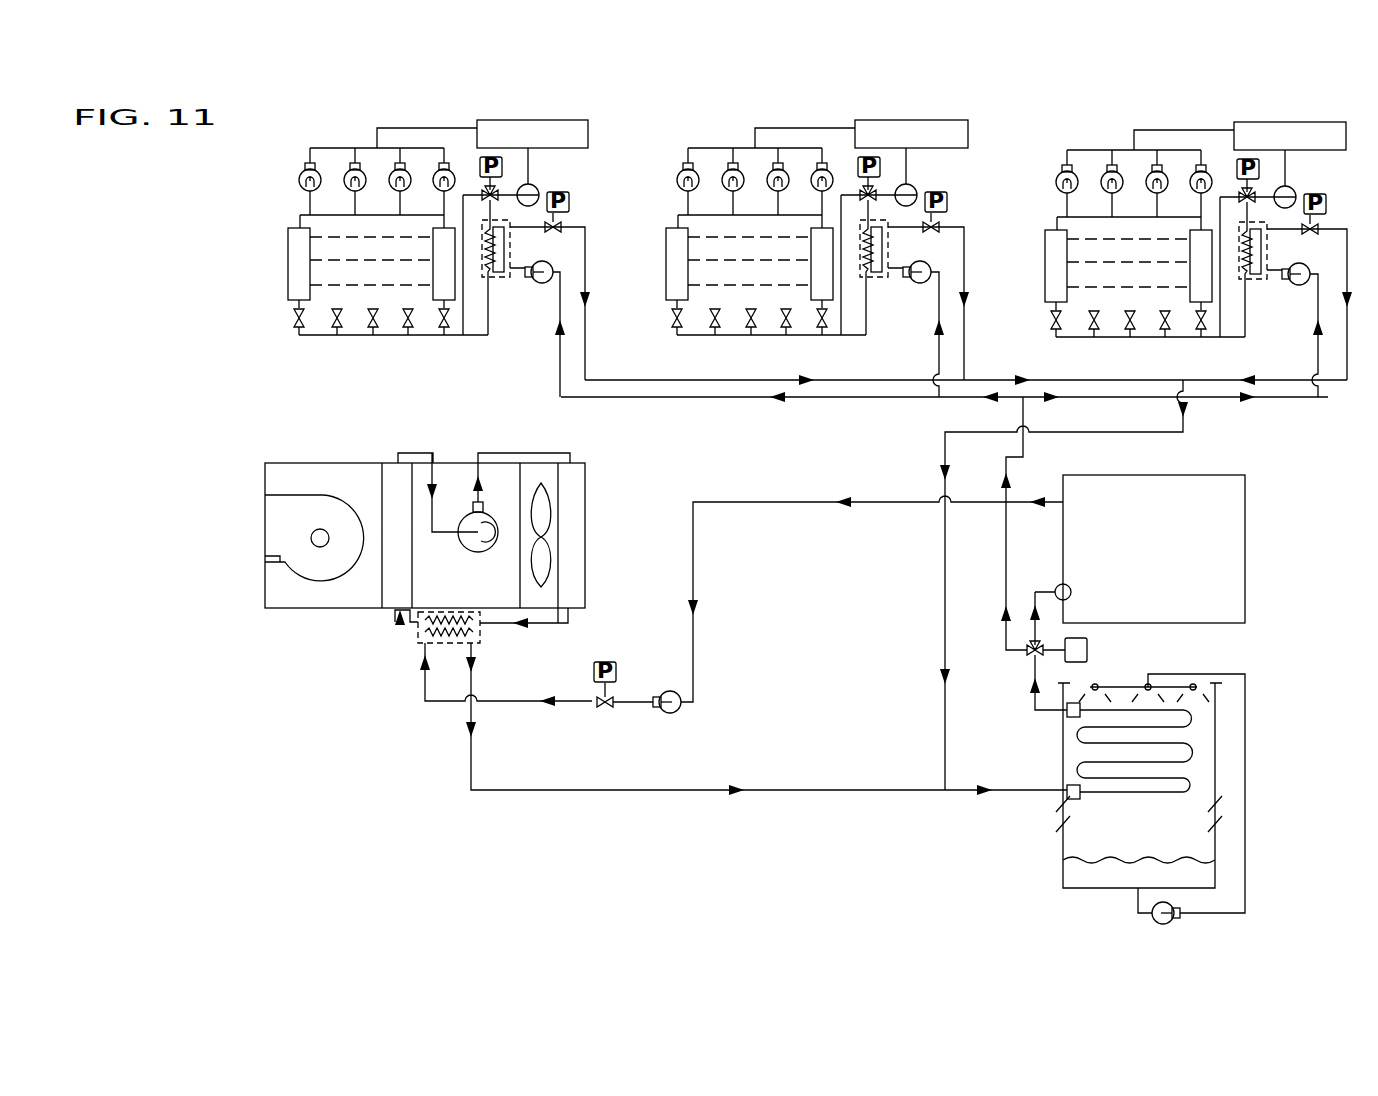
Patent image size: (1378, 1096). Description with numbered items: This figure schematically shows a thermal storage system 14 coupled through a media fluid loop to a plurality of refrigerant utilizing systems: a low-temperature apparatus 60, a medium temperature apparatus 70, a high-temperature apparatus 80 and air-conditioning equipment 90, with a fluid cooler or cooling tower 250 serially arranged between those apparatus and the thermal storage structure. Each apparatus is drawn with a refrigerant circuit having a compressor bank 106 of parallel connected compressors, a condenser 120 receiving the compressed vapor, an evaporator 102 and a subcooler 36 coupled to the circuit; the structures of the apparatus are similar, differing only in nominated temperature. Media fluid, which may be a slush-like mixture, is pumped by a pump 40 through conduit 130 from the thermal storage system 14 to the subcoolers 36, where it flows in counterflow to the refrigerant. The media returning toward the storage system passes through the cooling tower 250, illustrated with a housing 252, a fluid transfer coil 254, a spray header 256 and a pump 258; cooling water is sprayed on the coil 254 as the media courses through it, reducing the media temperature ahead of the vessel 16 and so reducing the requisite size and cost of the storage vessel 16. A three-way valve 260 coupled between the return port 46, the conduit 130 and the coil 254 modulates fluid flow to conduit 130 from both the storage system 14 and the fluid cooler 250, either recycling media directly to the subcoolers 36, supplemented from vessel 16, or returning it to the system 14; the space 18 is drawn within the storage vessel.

The low-temperature apparatus 60 is at (468, 91).
The medium temperature apparatus 70 is at (823, 232).
The high-temperature apparatus 80 is at (1204, 231).
The condenser 120 is at (543, 120).
The compressor bank 106 is at (288, 189).
The first evaporator 102 is at (288, 288).
The subcooler 36 is at (502, 292).
The pump 40 is at (540, 284).
The conduit 130 is at (670, 397).
The air-conditioning equipment 90 is at (273, 445).
The thermal storage vessel 16 is at (1262, 480).
The thermal storage system 14 is at (1188, 538).
The conditioned space 18 is at (1157, 539).
The return port 46 is at (1072, 591).
The three-way valve 260 is at (1030, 660).
The cooling tower 250 is at (1167, 789).
The spray header 256 is at (1118, 687).
The fluid transfer coil 254 is at (1122, 794).
The housing 252 is at (1062, 838).
The pump 258 is at (1167, 923).